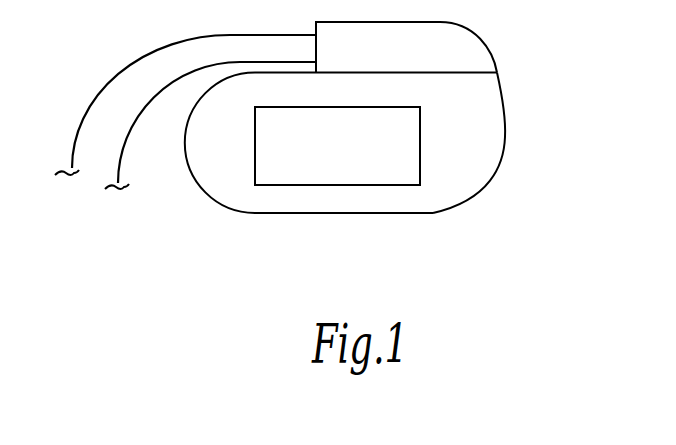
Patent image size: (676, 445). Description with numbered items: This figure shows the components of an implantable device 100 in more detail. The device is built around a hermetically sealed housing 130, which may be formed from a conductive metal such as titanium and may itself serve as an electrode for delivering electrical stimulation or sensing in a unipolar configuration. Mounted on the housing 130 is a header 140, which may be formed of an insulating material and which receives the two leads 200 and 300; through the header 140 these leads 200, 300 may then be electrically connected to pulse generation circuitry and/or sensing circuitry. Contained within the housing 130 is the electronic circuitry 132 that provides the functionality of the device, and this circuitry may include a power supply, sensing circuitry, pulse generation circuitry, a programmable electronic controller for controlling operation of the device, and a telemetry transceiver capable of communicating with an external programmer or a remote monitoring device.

The implantable device 100 is at (495, 82).
The hermetically sealed housing 130 is at (503, 128).
The electronic circuitry 132 is at (421, 125).
The header 140 is at (473, 37).
The lead 200 is at (73, 148).
The lead 300 is at (122, 165).